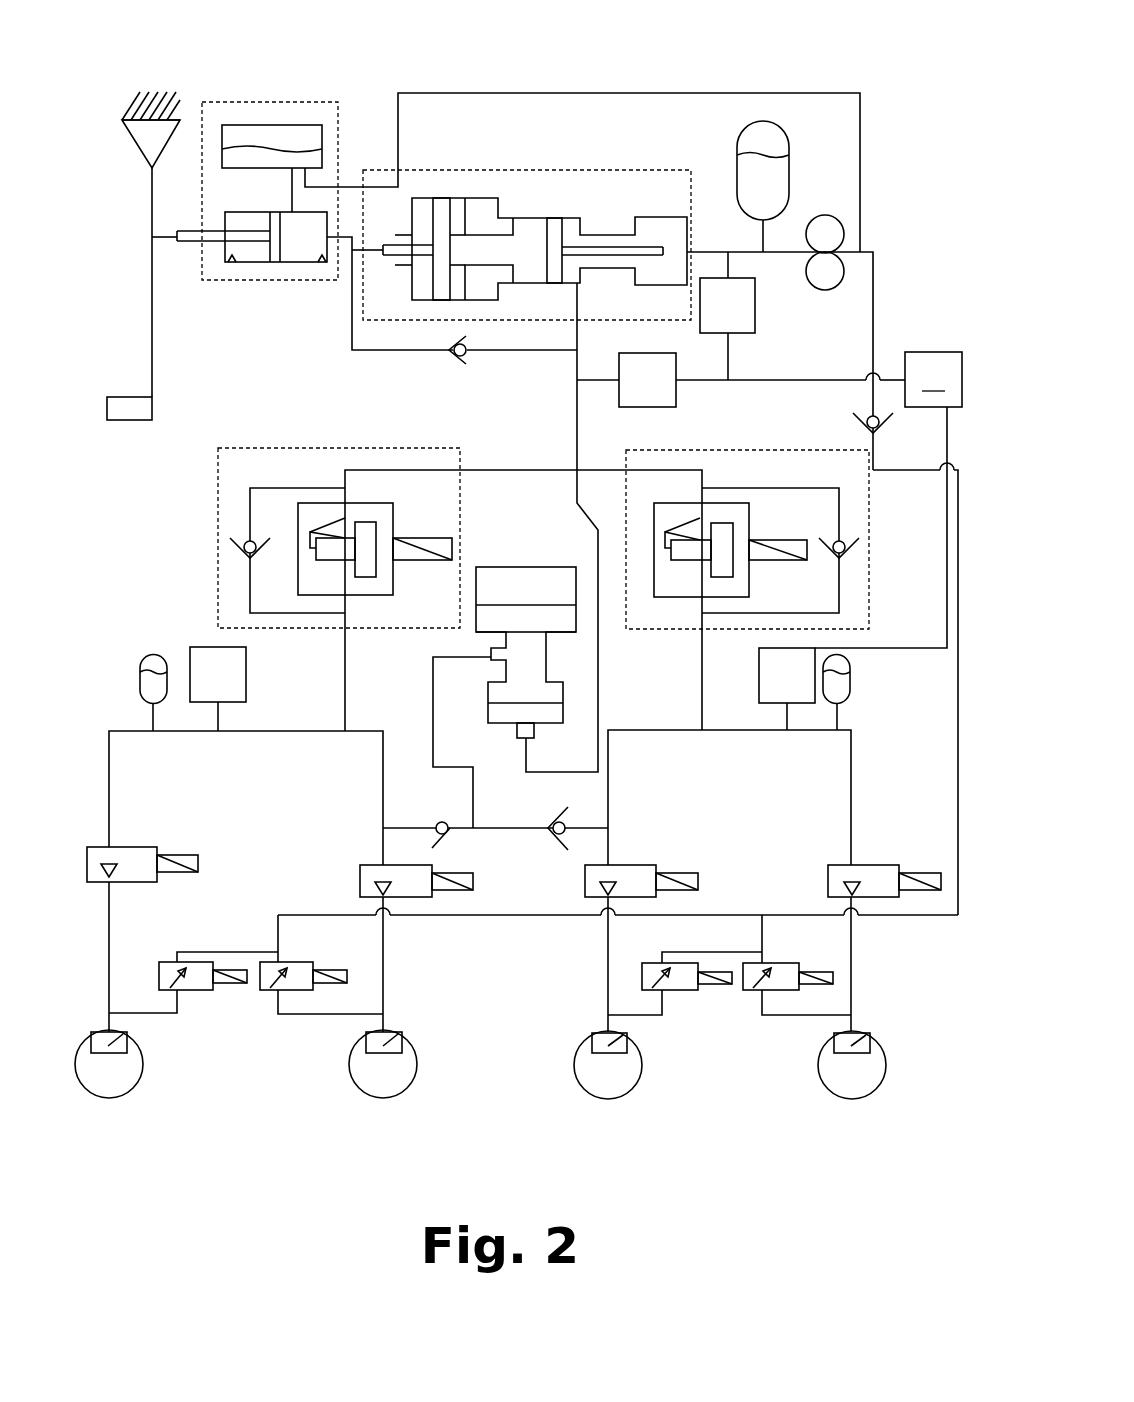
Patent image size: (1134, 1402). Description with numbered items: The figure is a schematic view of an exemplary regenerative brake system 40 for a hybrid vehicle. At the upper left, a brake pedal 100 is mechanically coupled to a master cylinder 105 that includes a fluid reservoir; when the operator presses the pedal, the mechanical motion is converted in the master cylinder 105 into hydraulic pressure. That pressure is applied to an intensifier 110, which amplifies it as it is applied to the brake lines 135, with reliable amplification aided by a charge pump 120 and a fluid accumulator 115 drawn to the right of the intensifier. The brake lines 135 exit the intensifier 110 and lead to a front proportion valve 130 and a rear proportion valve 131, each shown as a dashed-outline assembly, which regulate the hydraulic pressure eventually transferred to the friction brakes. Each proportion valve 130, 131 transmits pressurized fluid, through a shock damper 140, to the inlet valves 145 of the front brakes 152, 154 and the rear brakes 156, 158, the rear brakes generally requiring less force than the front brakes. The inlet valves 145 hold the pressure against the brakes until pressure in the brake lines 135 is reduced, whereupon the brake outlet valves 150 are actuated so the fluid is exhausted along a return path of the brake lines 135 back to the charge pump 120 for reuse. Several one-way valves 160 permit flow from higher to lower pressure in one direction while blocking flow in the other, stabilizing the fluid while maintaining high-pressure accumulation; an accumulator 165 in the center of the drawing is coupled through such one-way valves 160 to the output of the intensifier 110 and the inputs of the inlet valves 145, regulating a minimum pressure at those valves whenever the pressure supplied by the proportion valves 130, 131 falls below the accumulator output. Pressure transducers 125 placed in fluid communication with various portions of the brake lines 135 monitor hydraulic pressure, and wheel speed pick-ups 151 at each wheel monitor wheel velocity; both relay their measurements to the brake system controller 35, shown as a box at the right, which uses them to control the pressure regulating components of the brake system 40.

The brake system 40 is at (775, 46).
The brake system controller 35 is at (933, 379).
The brake pedal 100 is at (152, 328).
The master cylinder 105 is at (272, 100).
The intensifier 110 is at (527, 168).
The fluid accumulator 115 is at (790, 187).
The charge pump 120 is at (848, 228).
The pressure transducers 125 is at (757, 307).
The front proportion valve 130 is at (340, 447).
The rear proportion valve 131 is at (869, 600).
The brake lines 135 is at (873, 337).
The shock damper 140 is at (142, 653).
The inlet valves 145 is at (158, 855).
The brake outlet valves 150 is at (315, 968).
The wheel speed pick-ups 151 is at (127, 1033).
The front brake 152 is at (108, 1098).
The front brake 154 is at (383, 1098).
The rear brake 156 is at (608, 1098).
The rear brake 158 is at (852, 1098).
The one-way valves 160 is at (467, 332).
The accumulator 165 is at (525, 565).